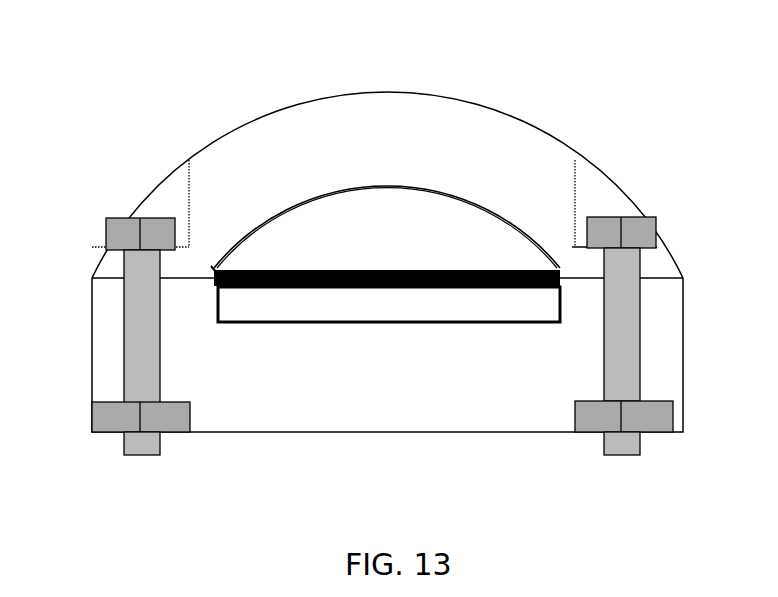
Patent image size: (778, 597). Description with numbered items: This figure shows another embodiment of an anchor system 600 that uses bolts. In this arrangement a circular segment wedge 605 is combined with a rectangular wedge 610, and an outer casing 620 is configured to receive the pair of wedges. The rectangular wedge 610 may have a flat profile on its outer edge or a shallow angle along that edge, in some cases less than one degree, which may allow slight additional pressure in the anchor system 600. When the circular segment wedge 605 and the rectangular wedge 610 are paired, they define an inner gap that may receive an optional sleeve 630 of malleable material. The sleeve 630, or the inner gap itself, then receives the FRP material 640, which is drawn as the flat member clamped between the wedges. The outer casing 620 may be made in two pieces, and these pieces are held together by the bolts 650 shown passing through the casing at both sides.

The anchor system 600 is at (583, 106).
The circular segment wedge 605 is at (296, 238).
The rectangular wedge 610 is at (284, 306).
The outer casing 620 is at (392, 132).
The sleeve 630 is at (212, 268).
The FRP material 640 is at (419, 287).
The bolts 650 is at (106, 232).